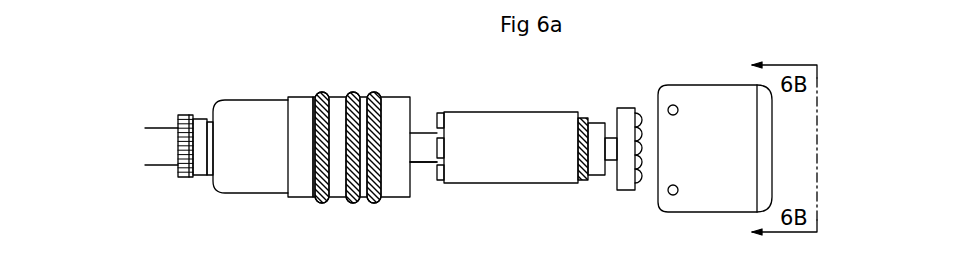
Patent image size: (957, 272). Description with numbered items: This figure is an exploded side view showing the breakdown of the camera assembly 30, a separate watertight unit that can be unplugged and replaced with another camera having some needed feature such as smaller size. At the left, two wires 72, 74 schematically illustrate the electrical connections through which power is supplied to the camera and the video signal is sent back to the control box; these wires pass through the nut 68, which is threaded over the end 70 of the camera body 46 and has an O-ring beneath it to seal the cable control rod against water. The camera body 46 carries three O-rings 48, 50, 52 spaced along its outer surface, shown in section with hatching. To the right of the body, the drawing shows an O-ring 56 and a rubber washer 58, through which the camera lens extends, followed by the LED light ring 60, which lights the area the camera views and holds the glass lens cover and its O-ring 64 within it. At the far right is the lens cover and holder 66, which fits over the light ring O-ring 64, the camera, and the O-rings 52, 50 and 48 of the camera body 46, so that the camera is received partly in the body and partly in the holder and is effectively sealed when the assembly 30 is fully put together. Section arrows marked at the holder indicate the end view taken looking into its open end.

The camera assembly 30 is at (177, 60).
The camera body 46 is at (293, 92).
The O-ring 48 is at (322, 92).
The O-ring 50 is at (354, 92).
The O-ring 52 is at (376, 92).
The O-ring 56 is at (582, 183).
The rubber washer 58 is at (610, 162).
The LED light ring 60 is at (628, 105).
The O-ring 64 is at (746, 271).
The lens cover and holder 66 is at (715, 82).
The nut 68 is at (185, 178).
The end of camera body 70 is at (211, 115).
The wire 72 is at (422, 133).
The wire 74 is at (428, 165).